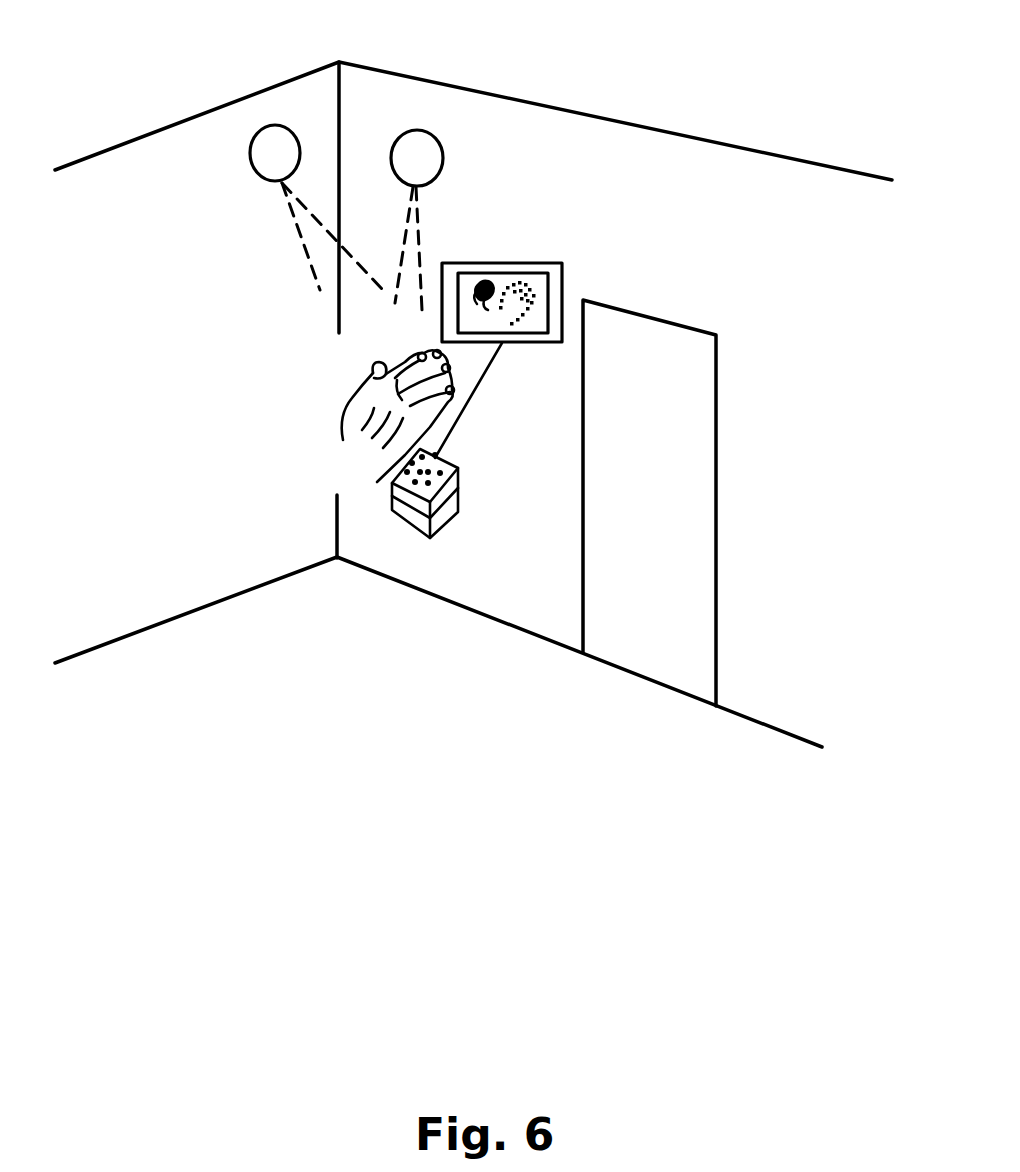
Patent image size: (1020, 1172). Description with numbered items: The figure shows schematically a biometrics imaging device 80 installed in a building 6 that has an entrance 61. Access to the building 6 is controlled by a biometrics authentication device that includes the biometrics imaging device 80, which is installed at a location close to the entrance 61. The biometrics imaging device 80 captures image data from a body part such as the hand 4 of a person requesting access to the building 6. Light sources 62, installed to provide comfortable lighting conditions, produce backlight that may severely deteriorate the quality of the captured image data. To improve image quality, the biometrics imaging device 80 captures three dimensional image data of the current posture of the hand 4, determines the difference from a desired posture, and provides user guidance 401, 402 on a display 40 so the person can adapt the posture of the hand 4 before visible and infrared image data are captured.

The building 6 is at (737, 103).
The light sources 62 is at (410, 138).
The entrance 61 is at (675, 398).
The display 40 is at (546, 400).
The user guidance 401 is at (484, 288).
The user guidance 402 is at (530, 298).
The hand 4 is at (322, 413).
The biometrics imaging device 80 is at (399, 558).